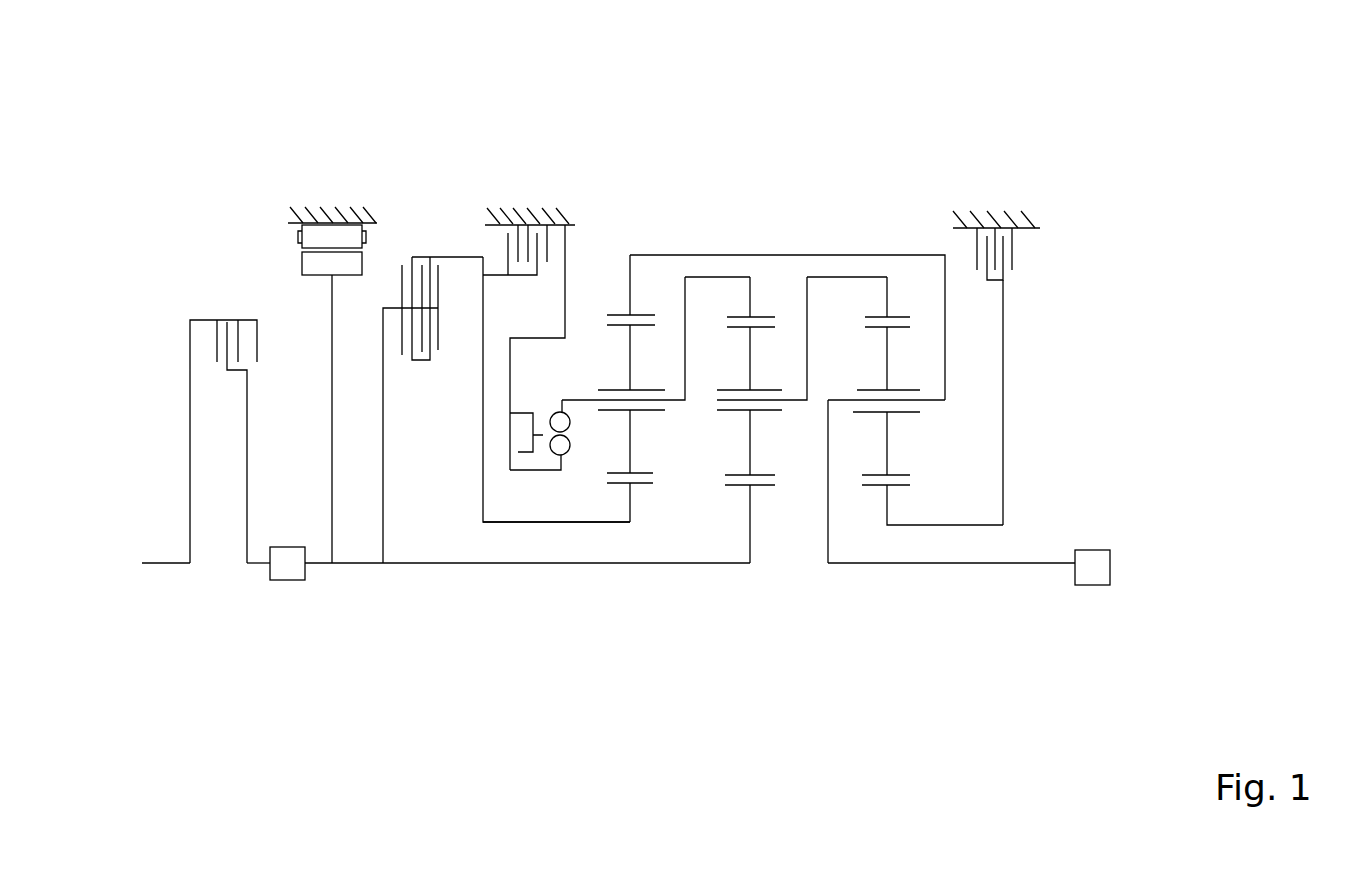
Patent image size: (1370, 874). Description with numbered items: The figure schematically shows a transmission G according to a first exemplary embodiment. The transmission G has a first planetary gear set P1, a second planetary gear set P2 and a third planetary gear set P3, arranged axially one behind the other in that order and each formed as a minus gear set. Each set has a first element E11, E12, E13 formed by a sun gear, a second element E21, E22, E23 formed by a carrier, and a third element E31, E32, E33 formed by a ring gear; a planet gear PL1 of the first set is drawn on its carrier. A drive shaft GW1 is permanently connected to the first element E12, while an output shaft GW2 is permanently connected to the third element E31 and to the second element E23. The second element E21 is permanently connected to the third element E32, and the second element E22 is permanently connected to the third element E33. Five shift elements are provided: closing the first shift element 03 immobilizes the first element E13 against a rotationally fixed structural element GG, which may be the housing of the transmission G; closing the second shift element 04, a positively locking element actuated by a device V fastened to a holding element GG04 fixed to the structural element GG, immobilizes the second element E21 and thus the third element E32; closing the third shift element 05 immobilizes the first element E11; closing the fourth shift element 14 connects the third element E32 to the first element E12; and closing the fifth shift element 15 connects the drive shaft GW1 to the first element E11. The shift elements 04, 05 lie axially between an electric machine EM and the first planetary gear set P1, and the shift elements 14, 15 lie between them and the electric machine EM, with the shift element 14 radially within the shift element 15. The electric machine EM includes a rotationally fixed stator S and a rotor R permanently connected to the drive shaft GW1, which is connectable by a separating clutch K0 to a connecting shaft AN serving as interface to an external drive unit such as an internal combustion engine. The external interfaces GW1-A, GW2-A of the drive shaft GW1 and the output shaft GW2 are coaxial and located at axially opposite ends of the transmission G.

The connecting shaft AN is at (155, 570).
The separating clutch K0 is at (237, 316).
The external interface of the drive shaft GW1-A is at (270, 580).
The electric machine EM is at (337, 283).
The stator S is at (343, 233).
The rotor R is at (330, 263).
The drive shaft GW1 is at (360, 567).
The fifth shift element 15 is at (424, 254).
The fourth shift element 14 is at (422, 364).
The third shift element 05 is at (500, 245).
The holding element GG04 is at (566, 268).
The device for actuating the second shift element V is at (515, 463).
The planet gear PL1 is at (633, 444).
The second shift element 04 is at (582, 437).
The third element of the first planetary gear set E31 is at (613, 315).
The second element of the first planetary gear set E21 is at (673, 395).
The first element of the first planetary gear set E11 is at (627, 484).
The first planetary gear set P1 is at (630, 580).
The third element of the second planetary gear set E32 is at (762, 316).
The second element of the second planetary gear set E22 is at (793, 402).
The first element of the second planetary gear set E12 is at (735, 487).
The second planetary gear set P2 is at (748, 580).
The third element of the third planetary gear set E33 is at (893, 317).
The second element of the third planetary gear set E23 is at (930, 400).
The first element of the third planetary gear set E13 is at (870, 487).
The third planetary gear set P3 is at (885, 580).
The output shaft GW2 is at (1025, 566).
The external interface of the output shaft GW2-A is at (1112, 565).
The rotationally fixed structural element GG is at (990, 225).
The first shift element 03 is at (1030, 252).
The transmission G is at (1093, 327).